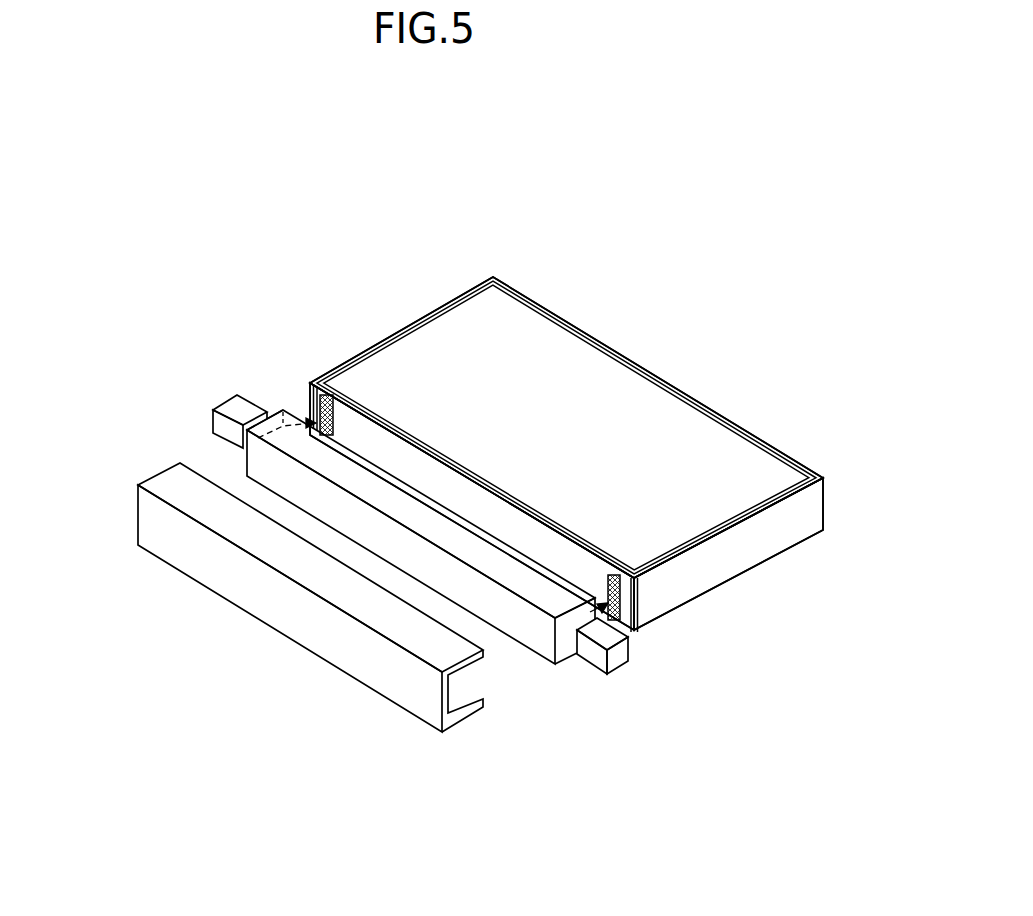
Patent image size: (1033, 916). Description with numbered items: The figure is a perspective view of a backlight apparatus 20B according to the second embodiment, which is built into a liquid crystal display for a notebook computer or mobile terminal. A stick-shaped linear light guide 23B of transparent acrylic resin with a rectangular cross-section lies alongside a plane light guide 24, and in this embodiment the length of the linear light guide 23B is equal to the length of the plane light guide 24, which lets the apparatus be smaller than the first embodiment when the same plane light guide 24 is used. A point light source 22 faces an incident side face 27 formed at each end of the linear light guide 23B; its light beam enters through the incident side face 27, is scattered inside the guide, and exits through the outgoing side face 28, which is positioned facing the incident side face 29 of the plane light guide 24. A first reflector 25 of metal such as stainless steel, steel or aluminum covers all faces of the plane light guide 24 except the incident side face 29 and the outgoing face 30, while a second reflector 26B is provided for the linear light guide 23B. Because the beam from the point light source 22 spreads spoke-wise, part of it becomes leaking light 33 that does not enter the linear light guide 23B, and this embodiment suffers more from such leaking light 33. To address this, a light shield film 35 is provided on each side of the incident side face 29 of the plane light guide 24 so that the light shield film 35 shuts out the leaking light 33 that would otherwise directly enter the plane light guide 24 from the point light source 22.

The backlight apparatus 20B is at (477, 184).
The point light source 22 is at (236, 405).
The linear light guide 23B is at (325, 556).
The plane light guide 24 is at (610, 395).
The first reflector 25 is at (783, 530).
The second reflector 26B is at (383, 675).
The incident side face 27 is at (375, 544).
The outgoing side face 28 is at (490, 530).
The incident side face 29 is at (405, 455).
The outgoing face 30 is at (697, 445).
The leaking light 33 is at (592, 611).
The light shield film 35 is at (315, 382).